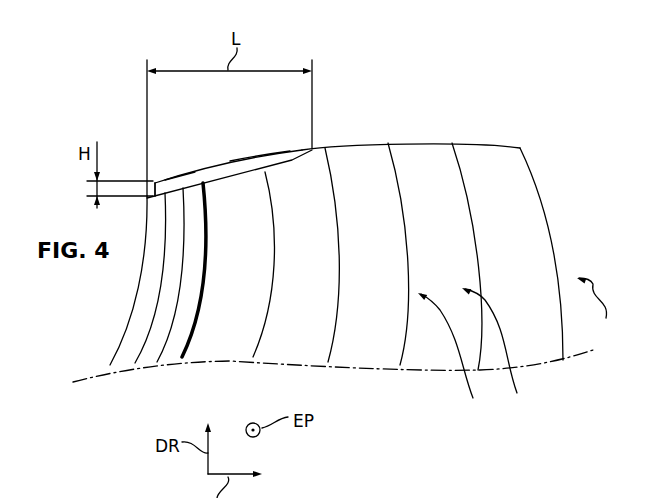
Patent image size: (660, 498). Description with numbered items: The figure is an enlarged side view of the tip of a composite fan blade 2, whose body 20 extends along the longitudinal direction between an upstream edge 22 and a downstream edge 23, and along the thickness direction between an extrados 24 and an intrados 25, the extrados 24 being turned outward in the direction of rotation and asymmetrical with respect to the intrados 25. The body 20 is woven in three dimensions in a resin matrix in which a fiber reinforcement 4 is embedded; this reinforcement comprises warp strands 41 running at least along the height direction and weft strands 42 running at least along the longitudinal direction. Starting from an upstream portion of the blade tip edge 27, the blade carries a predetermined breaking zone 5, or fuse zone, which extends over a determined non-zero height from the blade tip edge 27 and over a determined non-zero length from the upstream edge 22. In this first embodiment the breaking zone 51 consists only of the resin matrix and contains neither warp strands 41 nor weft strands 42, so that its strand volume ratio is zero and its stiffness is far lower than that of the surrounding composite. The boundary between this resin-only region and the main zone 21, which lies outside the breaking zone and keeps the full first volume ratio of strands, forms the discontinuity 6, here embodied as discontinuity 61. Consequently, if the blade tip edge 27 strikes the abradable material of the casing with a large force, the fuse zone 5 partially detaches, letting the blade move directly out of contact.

The fan blade 2 is at (352, 258).
The body 20 is at (372, 338).
The main zone 21 is at (225, 328).
The upstream edge 22 is at (137, 298).
The downstream edge 23 is at (552, 225).
The extrados 24 is at (445, 345).
The intrados 25 is at (601, 307).
The blade tip edge 27 is at (230, 158).
The fiber reinforcement 4 is at (215, 297).
The warp strands 41 is at (455, 355).
The weft strands 42 is at (500, 350).
The predetermined breaking zone 5 is at (218, 173).
The breaking zone 51 is at (256, 163).
The discontinuity 6 is at (157, 185).
The discontinuity 61 is at (190, 180).